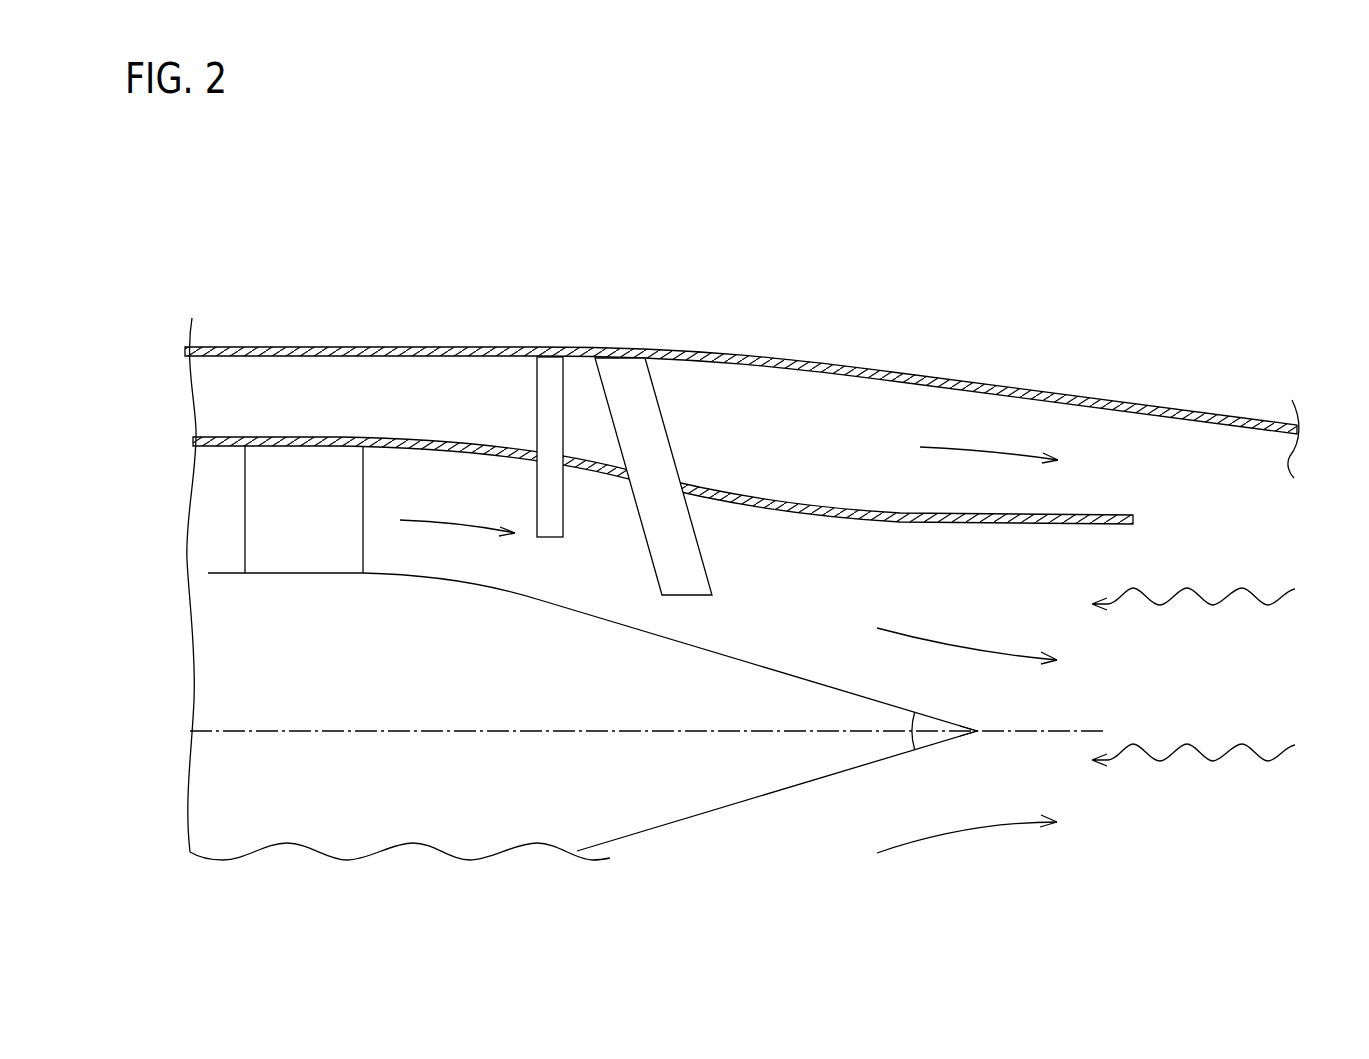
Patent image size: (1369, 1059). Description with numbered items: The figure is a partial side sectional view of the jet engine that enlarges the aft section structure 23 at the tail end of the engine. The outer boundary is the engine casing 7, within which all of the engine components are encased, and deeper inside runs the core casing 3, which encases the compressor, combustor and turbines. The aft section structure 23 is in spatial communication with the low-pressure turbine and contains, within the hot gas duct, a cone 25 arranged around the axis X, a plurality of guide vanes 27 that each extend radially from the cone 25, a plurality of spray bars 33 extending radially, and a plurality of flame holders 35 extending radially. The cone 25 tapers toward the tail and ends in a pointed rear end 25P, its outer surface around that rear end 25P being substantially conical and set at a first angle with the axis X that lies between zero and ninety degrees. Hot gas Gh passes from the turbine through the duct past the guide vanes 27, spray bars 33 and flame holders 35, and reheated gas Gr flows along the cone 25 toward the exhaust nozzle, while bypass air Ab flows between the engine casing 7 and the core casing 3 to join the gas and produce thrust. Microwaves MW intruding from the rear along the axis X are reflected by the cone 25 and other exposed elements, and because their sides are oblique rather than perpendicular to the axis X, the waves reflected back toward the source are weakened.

The engine casing 7 is at (246, 347).
The core casing 3 is at (248, 437).
The aft section structure 23 is at (650, 205).
The cone 25 is at (810, 680).
The rear end 25P is at (981, 730).
The guide vanes 27 is at (363, 500).
The spray bars 33 is at (537, 502).
The flame holders 35 is at (696, 538).
The axis X is at (601, 728).
The hot gas Gh is at (437, 520).
The reheated gas Gr is at (955, 647).
The bypass air Ab is at (955, 447).
The microwaves MW is at (1185, 744).